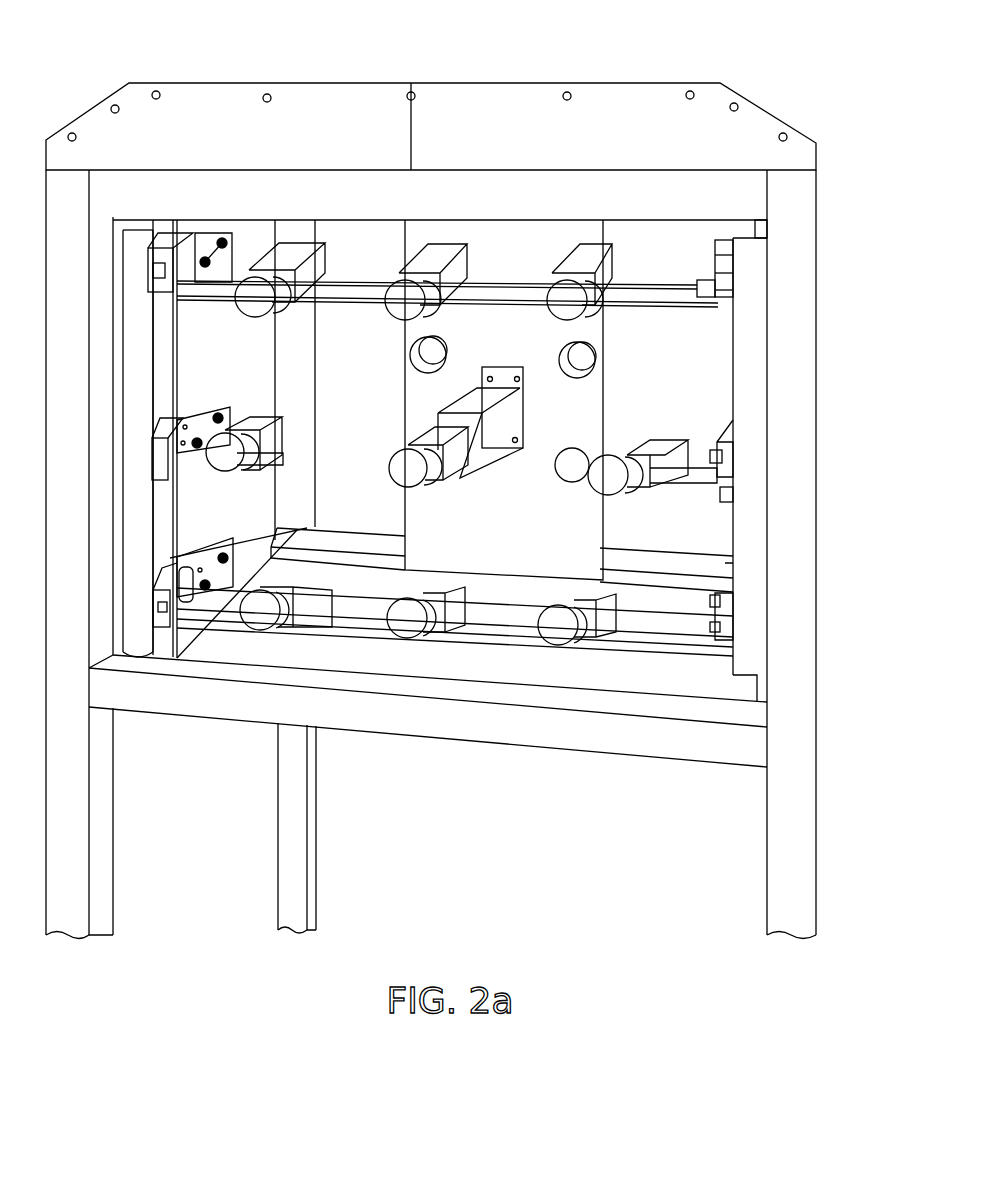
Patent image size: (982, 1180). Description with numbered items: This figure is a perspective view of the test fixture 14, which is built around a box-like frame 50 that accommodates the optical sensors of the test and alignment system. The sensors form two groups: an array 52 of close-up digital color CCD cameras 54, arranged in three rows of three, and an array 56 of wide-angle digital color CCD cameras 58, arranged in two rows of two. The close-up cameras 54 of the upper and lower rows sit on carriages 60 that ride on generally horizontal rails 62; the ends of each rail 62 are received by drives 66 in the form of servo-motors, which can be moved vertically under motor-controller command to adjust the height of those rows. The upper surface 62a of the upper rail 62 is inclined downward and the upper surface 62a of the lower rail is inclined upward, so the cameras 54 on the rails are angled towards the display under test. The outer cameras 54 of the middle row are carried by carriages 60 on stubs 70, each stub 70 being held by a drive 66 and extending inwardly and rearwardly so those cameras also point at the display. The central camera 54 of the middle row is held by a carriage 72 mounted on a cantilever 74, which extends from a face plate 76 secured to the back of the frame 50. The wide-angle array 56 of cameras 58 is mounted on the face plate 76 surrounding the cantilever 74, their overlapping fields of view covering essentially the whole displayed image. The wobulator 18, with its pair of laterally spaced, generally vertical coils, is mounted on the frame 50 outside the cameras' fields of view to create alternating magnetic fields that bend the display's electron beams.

The test fixture 14 is at (733, 79).
The wobulator 18 is at (137, 580).
The frame 50 is at (822, 318).
The array of close-up CCD cameras 52 is at (402, 658).
The close-up digital color CCD camera 54 is at (262, 305).
The array of wide-angle CCD cameras 56 is at (612, 378).
The wide-angle digital color CCD camera 58 is at (577, 360).
The carriage 60 is at (613, 265).
The horizontal rail 62 is at (511, 281).
The upper surface of rail 62a is at (515, 300).
The drive 66 is at (203, 412).
The stub 70 is at (268, 463).
The carriage 72 is at (450, 465).
The cantilever 74 is at (490, 438).
The face plate 76 is at (527, 240).